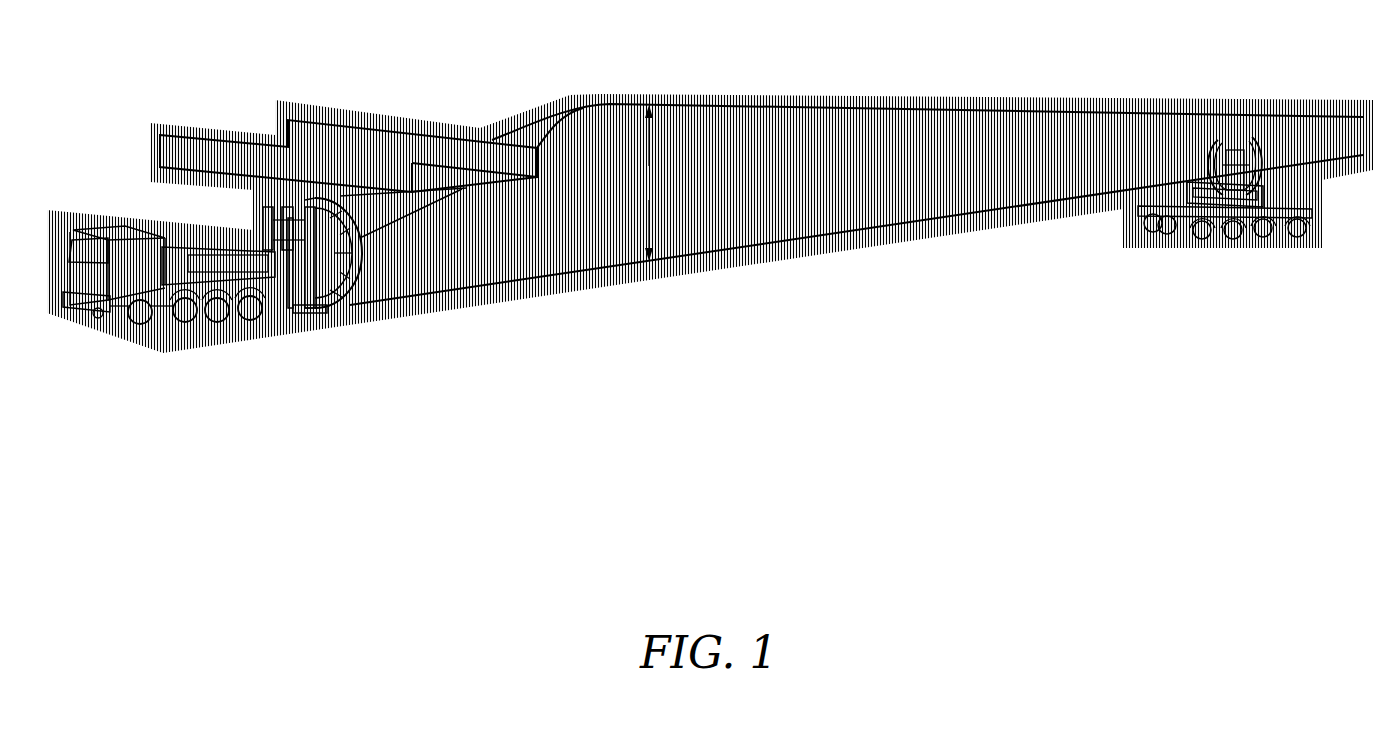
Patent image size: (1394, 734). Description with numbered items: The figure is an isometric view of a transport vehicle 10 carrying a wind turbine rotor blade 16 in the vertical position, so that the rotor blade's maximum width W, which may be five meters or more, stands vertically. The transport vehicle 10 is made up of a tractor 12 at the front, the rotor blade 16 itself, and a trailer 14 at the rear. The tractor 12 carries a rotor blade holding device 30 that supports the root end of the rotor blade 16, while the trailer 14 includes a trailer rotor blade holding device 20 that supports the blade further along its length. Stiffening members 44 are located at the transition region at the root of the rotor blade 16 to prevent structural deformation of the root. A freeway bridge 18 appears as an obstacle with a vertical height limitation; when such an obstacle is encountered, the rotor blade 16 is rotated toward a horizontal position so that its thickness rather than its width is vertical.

The transport vehicle 10 is at (156, 400).
The tractor 12 is at (137, 250).
The trailer 14 is at (1250, 235).
The rotor blade 16 is at (837, 137).
The freeway bridge 18 is at (376, 150).
The trailer rotor blade holding device 20 is at (1280, 156).
The rotor blade holding device 30 is at (295, 325).
The stiffening members 44 is at (343, 313).